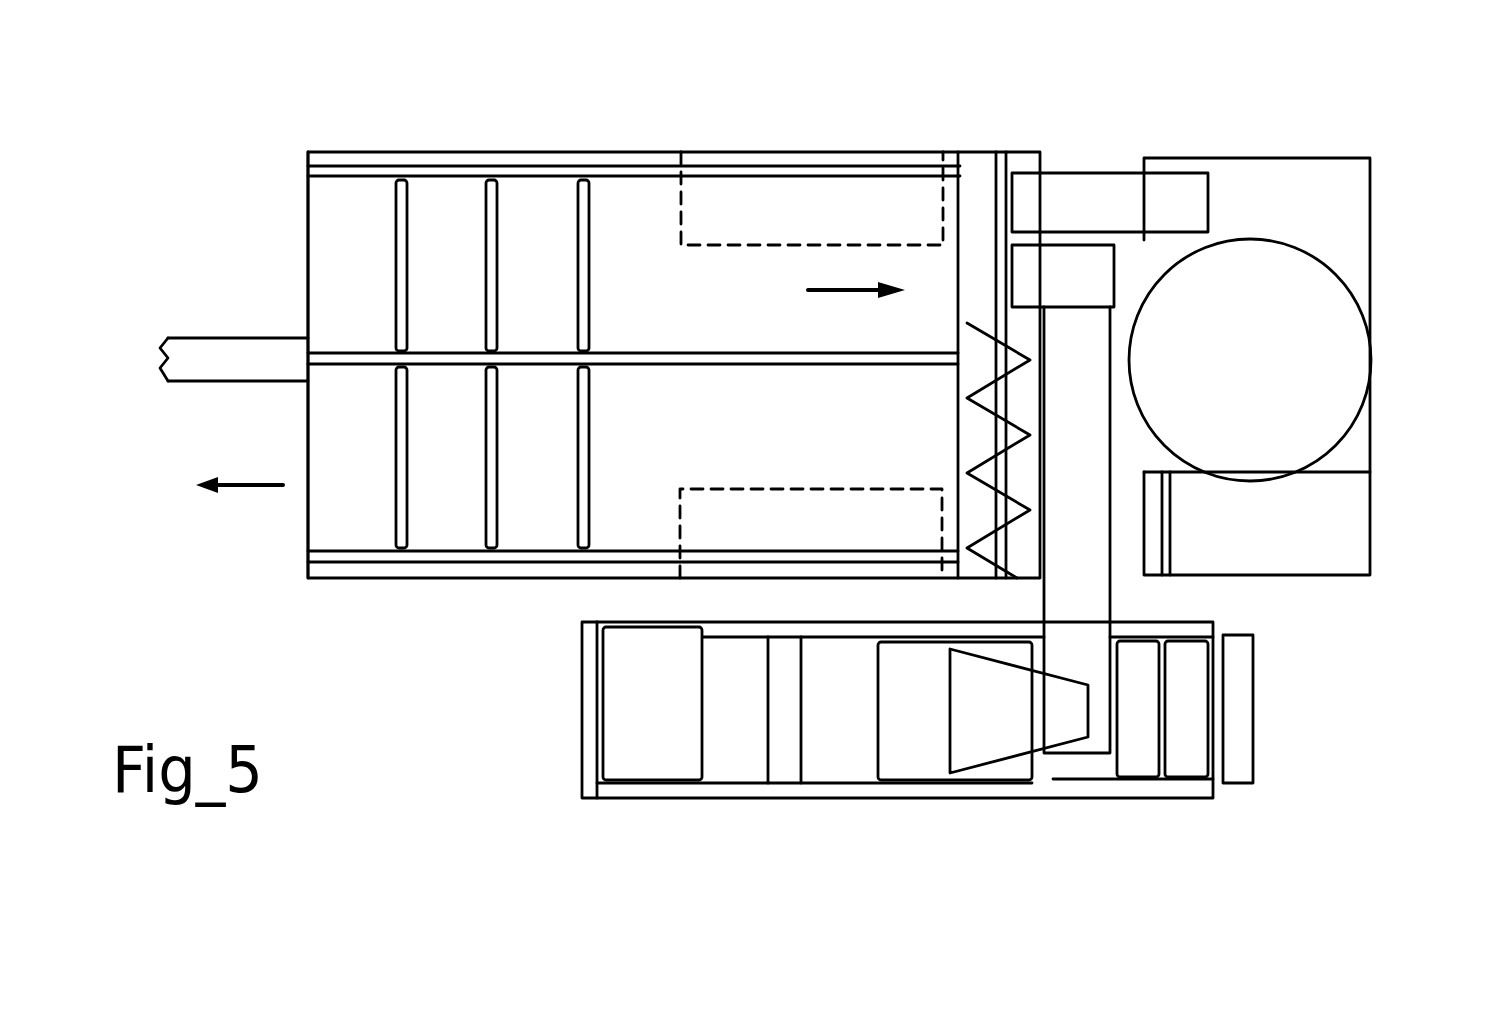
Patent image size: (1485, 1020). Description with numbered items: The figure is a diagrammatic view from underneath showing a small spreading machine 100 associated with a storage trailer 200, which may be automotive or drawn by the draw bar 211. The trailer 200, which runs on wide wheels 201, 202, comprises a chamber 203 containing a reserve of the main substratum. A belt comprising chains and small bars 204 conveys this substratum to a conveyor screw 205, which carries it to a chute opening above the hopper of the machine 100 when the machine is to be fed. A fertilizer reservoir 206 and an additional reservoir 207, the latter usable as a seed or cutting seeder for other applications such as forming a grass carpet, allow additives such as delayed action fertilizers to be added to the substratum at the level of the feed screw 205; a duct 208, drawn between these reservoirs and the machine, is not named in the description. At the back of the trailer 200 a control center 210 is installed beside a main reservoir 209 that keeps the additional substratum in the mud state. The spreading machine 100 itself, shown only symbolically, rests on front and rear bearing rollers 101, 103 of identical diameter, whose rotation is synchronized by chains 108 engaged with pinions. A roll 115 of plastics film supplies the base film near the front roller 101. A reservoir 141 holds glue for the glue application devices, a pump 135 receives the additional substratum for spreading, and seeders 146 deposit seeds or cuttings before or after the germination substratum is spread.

The spreading machine 100 is at (553, 650).
The front bearing roller 101 is at (620, 700).
The rear bearing roller 103 is at (900, 713).
The chain 108 is at (980, 680).
The roll 115 is at (783, 670).
The pump 135 is at (1125, 670).
The reservoir 141 is at (1182, 657).
The seeders 146 is at (1238, 657).
The trailer 200 is at (446, 142).
The wide wheel 201 is at (688, 196).
The wide wheel 202 is at (685, 517).
The chamber 203 is at (308, 220).
The belt comprising chains and small bars 204 is at (487, 228).
The conveyor screw 205 is at (990, 337).
The fertilizer reservoir 206 is at (1090, 188).
The additional reservoir 207 is at (1098, 290).
The supply duct 208 is at (1093, 405).
The main reservoir 209 is at (1281, 273).
The control center 210 is at (1326, 497).
The draw bar 211 is at (212, 372).